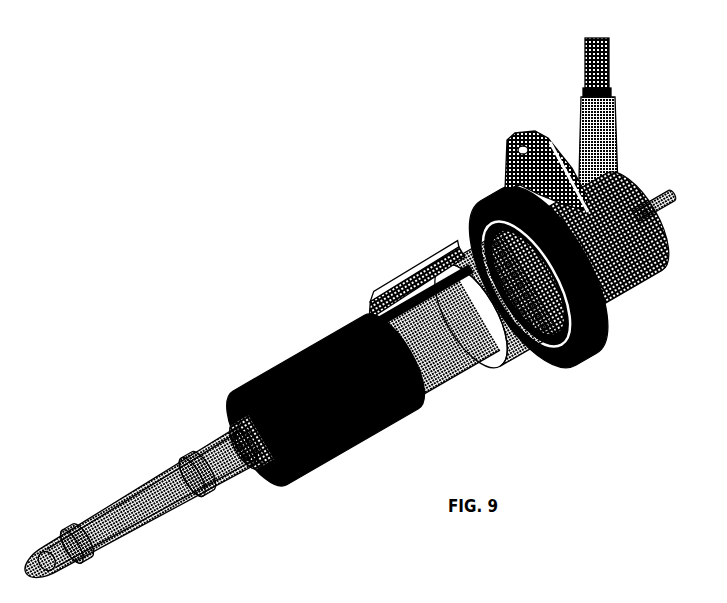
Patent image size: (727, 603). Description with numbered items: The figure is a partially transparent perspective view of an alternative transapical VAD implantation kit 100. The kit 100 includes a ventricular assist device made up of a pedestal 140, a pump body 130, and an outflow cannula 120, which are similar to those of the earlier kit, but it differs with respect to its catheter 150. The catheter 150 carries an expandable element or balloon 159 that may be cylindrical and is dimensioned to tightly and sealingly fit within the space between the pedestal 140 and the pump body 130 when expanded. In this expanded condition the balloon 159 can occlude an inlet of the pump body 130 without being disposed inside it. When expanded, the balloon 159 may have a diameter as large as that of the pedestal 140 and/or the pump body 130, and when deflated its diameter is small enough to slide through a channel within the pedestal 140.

The transapical VAD implantation kit 100 is at (67, 79).
The outflow cannula 120 is at (118, 450).
The pump body 130 is at (270, 333).
The pedestal 140 is at (460, 240).
The catheter 150 is at (650, 198).
The expandable element/balloon 159 is at (397, 297).